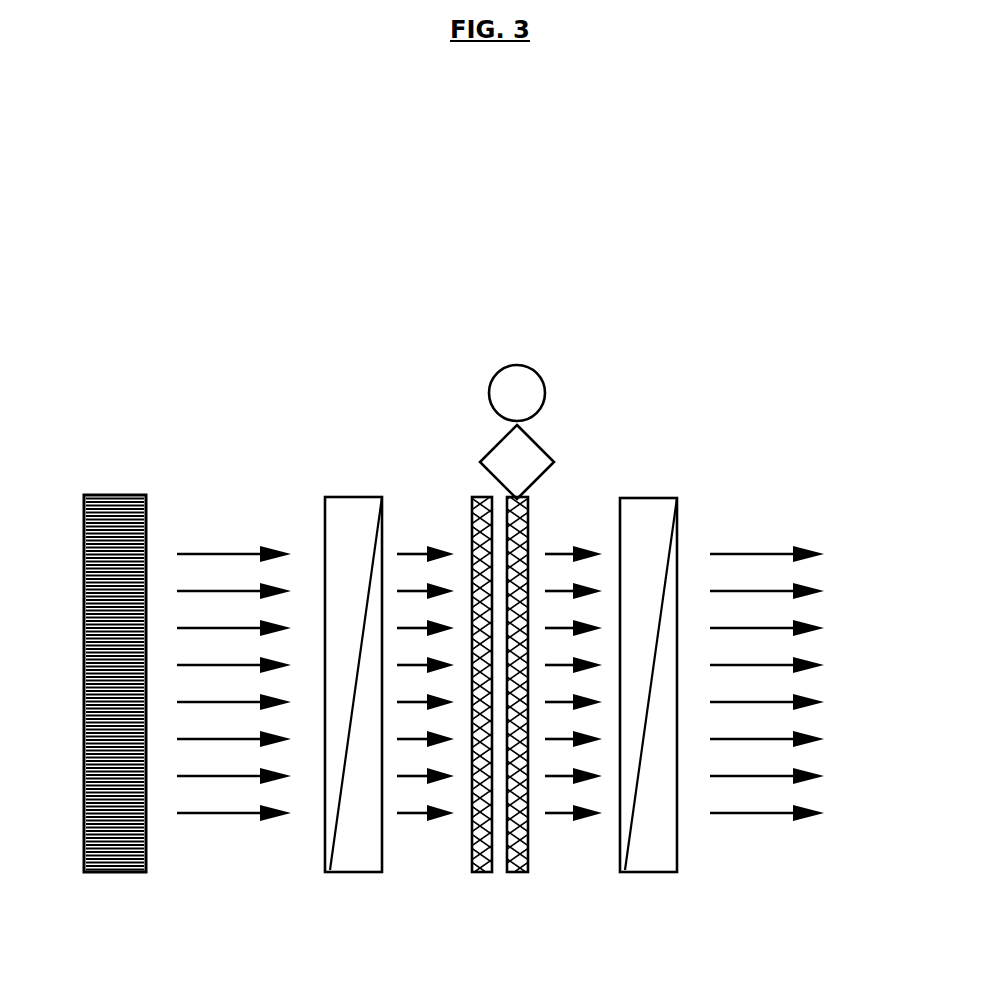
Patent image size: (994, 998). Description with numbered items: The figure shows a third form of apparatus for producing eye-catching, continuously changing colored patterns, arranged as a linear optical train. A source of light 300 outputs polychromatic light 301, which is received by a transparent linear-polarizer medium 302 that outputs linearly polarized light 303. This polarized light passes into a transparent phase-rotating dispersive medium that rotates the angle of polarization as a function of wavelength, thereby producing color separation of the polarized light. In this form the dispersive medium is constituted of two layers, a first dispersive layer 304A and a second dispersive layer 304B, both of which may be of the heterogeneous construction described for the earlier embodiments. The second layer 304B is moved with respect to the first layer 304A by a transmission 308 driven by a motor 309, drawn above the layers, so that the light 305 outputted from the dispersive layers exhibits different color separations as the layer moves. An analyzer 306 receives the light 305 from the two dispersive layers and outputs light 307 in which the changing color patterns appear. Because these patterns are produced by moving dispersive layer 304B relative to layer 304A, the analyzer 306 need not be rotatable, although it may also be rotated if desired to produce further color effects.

The source of light 300 is at (123, 873).
The polychromatic light 301 is at (215, 815).
The transparent linear-polarizer medium 302 is at (343, 873).
The linearly polarized light 303 is at (416, 815).
The dispersive layer 304A is at (473, 873).
The movable dispersive layer 304B is at (510, 873).
The light outputted from the dispersive layers 305 is at (567, 815).
The analyzer 306 is at (640, 873).
The light outputted from analyzer 307 is at (767, 815).
The transmission 308 is at (554, 462).
The motor 309 is at (548, 385).